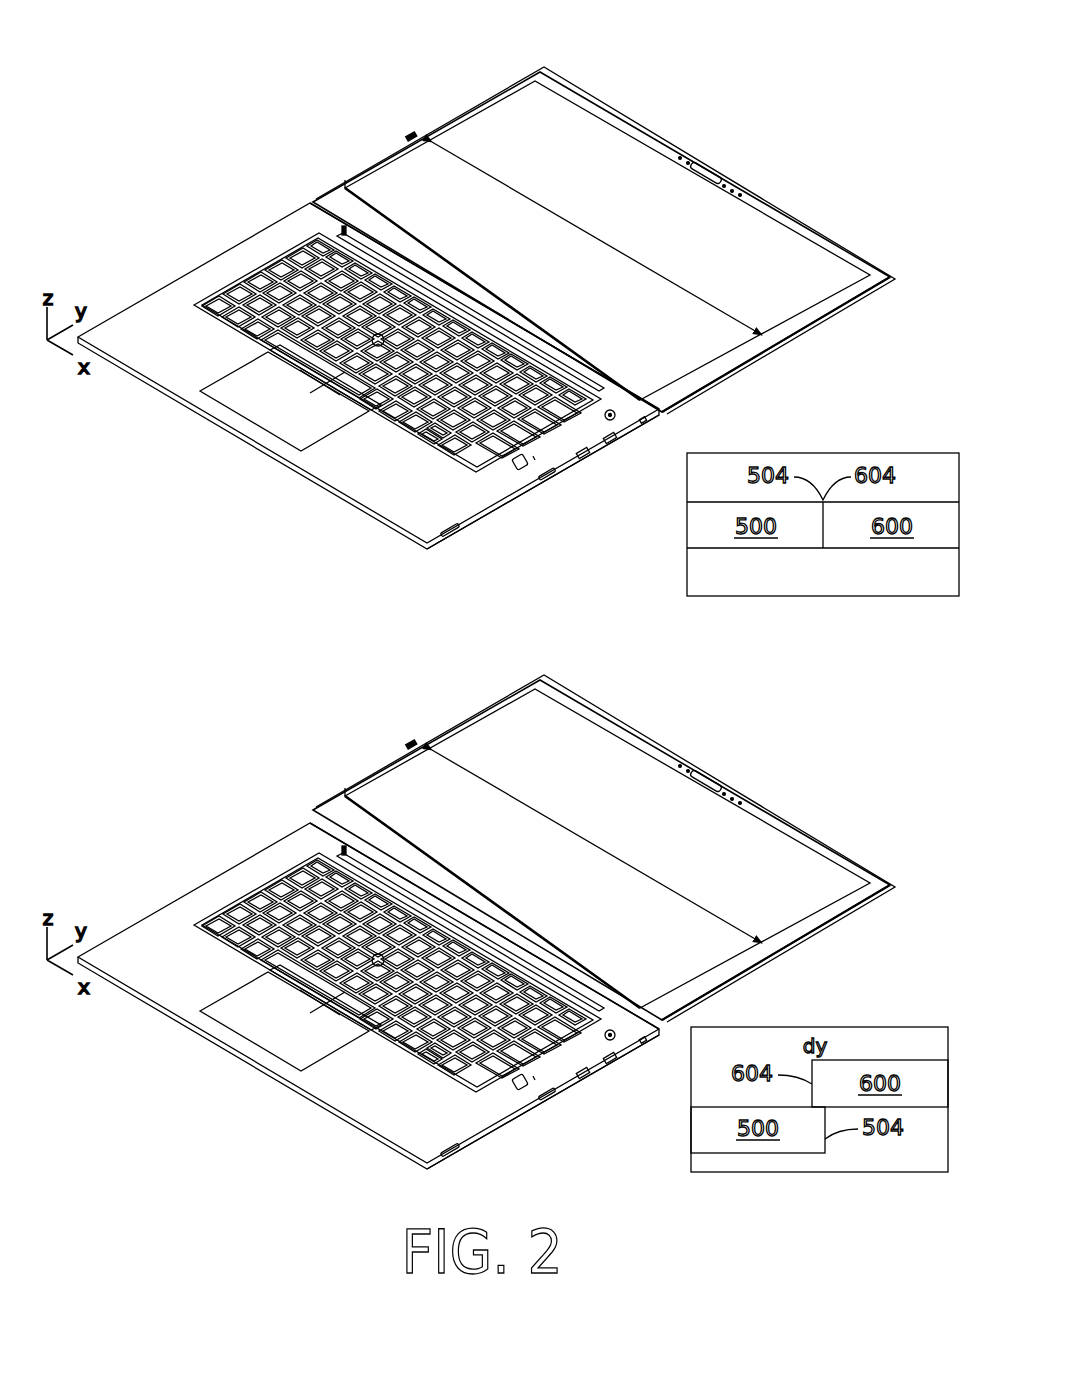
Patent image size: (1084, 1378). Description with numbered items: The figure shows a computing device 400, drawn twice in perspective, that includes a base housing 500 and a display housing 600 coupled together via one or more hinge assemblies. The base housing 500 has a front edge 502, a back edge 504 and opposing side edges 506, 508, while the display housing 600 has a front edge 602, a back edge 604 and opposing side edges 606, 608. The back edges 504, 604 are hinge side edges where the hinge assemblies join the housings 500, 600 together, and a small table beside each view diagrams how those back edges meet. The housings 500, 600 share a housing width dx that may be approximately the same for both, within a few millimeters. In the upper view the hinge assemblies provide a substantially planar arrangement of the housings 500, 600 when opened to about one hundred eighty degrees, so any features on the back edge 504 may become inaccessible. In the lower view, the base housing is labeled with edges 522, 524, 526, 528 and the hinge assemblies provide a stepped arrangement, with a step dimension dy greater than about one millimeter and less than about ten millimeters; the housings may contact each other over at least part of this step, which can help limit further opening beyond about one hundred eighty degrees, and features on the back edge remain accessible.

The computing device 400 is at (766, 40).
The base housing 500 is at (226, 220).
The front edge 502 is at (350, 498).
The back edge 504 is at (310, 200).
The side edge 506 is at (176, 280).
The side edge 508 is at (535, 480).
The base housing bottom (second position) 522 is at (350, 1118).
The base rear edge at hinge (second position) 524 is at (310, 820).
The base top surface (second position) 526 is at (176, 900).
The base side edge (second position) 528 is at (535, 1102).
The display housing 600 is at (380, 100).
The front edge 602 is at (646, 131).
The back edge 604 is at (613, 380).
The side edge 606 is at (500, 96).
The side edge 608 is at (755, 357).